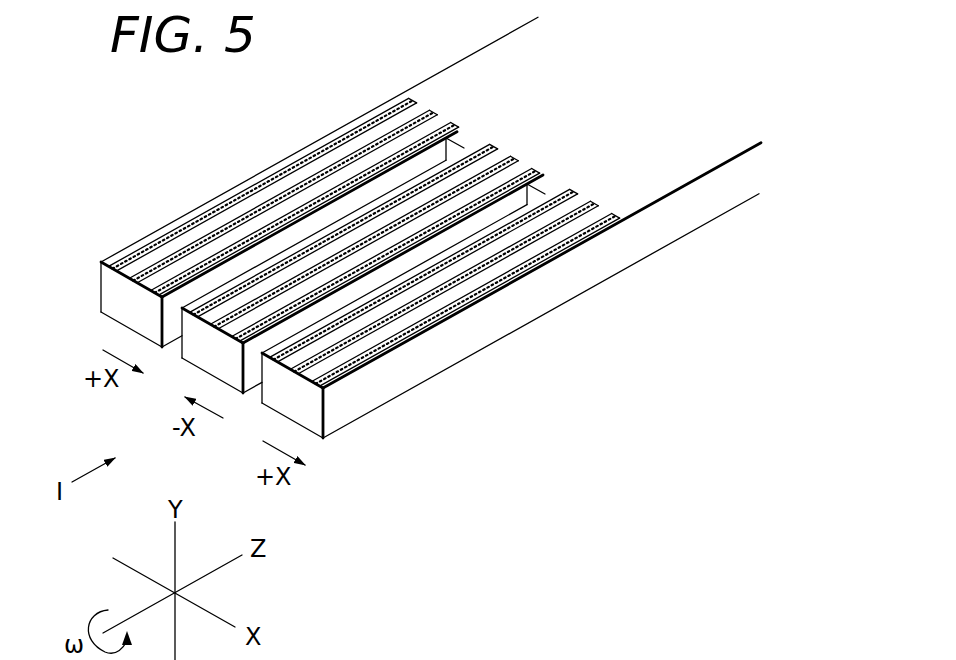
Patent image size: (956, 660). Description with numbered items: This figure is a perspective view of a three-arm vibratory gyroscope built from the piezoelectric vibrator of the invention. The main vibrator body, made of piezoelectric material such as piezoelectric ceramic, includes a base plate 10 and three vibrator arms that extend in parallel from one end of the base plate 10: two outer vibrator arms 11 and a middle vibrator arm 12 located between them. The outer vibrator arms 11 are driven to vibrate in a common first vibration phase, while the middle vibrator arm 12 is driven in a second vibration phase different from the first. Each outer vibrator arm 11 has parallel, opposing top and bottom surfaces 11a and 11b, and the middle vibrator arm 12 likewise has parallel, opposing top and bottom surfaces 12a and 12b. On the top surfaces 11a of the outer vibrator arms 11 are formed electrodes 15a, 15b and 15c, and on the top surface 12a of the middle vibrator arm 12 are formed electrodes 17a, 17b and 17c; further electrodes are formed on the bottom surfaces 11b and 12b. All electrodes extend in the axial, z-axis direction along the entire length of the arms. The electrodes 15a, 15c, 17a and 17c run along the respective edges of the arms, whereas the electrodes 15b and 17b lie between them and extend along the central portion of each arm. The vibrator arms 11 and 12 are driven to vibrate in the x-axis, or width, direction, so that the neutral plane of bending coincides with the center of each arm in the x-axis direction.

The base plate 10 is at (456, 93).
The outer vibrator arms 11 is at (106, 290).
The top surface of outer vibrator arm 11a is at (144, 256).
The bottom surface of outer vibrator arm 11b is at (120, 331).
The middle vibrator arm 12 is at (200, 360).
The top surface of middle vibrator arm 12a is at (248, 292).
The bottom surface of middle vibrator arm 12b is at (242, 395).
The electrode 15a is at (240, 195).
The electrode 15b is at (314, 180).
The electrode 15c is at (378, 176).
The electrode 17a is at (488, 142).
The electrode 17b is at (515, 156).
The electrode 17c is at (538, 172).